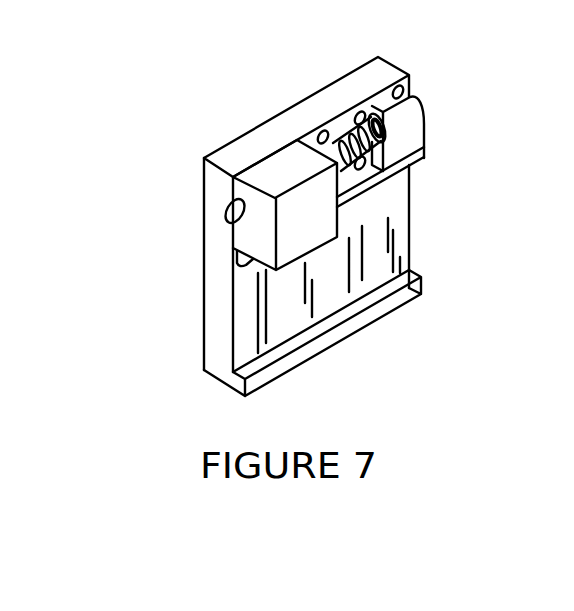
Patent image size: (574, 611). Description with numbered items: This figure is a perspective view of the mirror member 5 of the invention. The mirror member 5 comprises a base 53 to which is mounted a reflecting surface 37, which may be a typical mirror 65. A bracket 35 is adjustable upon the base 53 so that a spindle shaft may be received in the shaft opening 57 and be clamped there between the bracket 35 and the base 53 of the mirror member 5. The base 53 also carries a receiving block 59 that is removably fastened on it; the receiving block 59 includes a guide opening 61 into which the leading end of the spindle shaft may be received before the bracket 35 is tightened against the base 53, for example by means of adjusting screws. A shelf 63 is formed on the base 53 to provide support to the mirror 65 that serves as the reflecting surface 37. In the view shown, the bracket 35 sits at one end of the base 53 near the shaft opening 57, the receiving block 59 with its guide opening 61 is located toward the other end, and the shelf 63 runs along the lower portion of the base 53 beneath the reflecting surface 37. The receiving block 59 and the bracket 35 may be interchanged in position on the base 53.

The mirror member 5 is at (417, 83).
The bracket 35 is at (280, 168).
The reflecting surface 37 is at (402, 222).
The base 53 is at (218, 290).
The shaft opening 57 is at (228, 206).
The receiving block 59 is at (410, 135).
The guide opening 61 is at (353, 110).
The shelf 63 is at (395, 298).
The mirror 65 is at (233, 337).